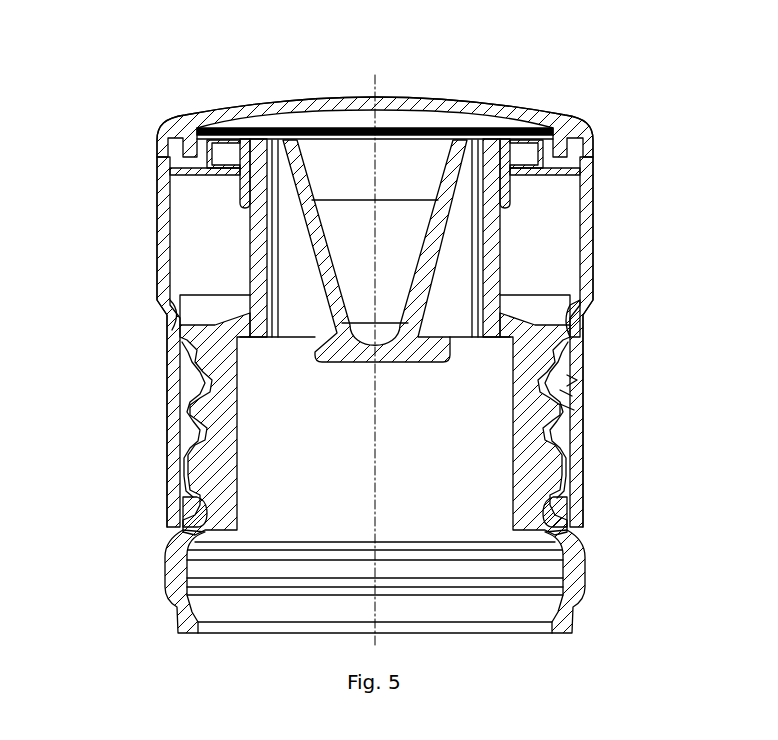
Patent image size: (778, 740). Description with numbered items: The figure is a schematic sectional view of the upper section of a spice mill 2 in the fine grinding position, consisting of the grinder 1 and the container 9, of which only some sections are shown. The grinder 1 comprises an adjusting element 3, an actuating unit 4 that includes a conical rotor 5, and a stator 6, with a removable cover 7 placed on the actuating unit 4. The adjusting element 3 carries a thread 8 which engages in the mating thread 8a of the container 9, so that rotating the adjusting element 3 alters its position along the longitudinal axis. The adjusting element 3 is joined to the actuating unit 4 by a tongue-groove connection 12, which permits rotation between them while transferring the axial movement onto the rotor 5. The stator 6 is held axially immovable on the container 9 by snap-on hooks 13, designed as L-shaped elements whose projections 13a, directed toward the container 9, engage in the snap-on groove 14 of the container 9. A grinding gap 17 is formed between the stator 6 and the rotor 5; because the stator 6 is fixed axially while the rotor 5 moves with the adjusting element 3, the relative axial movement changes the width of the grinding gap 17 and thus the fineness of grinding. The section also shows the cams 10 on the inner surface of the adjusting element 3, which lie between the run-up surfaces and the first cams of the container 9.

The grinder 1 is at (640, 247).
The spice mill 2 is at (112, 62).
The adjusting element 3 is at (582, 437).
The actuating unit 4 is at (586, 182).
The rotor 5 is at (292, 135).
The stator 6 is at (500, 237).
The cover 7 is at (493, 108).
The thread 8 is at (185, 432).
The mating thread 8a is at (190, 415).
The container 9 is at (575, 625).
The cams 10 is at (172, 497).
The tongue-groove connection 12 is at (590, 318).
The snap-on hooks 13 is at (578, 393).
The projection 13a is at (577, 381).
The snap-on groove 14 is at (580, 408).
The grinding gap 17 is at (268, 130).